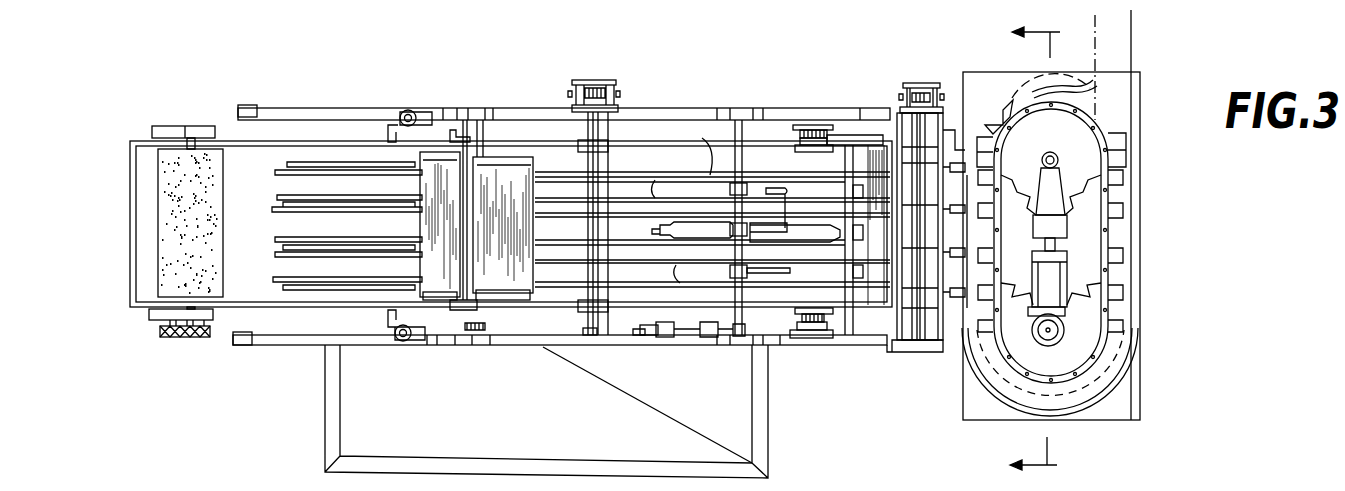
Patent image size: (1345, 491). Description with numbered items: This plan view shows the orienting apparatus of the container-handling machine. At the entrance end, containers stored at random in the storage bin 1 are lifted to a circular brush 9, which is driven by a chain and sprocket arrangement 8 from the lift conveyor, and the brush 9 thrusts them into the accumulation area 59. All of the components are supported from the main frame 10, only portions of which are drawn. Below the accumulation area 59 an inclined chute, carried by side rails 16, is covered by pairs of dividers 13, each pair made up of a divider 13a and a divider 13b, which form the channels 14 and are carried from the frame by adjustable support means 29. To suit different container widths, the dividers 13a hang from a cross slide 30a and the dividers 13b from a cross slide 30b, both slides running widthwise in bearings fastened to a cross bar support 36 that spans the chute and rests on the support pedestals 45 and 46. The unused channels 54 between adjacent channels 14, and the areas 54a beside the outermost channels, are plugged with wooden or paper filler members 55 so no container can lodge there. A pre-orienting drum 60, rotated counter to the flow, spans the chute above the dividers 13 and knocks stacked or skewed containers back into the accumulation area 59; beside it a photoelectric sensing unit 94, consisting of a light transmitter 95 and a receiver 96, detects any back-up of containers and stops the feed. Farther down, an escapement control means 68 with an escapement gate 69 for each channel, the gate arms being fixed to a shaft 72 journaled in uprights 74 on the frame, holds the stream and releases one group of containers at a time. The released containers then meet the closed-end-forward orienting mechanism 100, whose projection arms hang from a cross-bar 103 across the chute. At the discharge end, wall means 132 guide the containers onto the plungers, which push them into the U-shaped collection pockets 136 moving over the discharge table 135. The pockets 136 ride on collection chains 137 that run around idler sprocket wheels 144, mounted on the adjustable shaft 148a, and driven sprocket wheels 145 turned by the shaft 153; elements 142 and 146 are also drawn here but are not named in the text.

The storage bin 1 is at (490, 422).
The chain and sprocket arrangement 8 is at (160, 333).
The circular brush 9 is at (206, 208).
The main frame 10 is at (701, 107).
The dividers 13 is at (278, 171).
The divider 13a is at (684, 148).
The divider 13b is at (693, 229).
The channels 14 is at (378, 194).
The side rails 16 is at (1010, 251).
The adjustable support means 29 is at (558, 108).
The cross slide 30a is at (592, 232).
The cross slide 30b is at (600, 271).
The cross bar support 36 is at (592, 271).
The support pedestal 45 is at (594, 340).
The support pedestal 46 is at (608, 86).
The unused channels 54 is at (272, 200).
The areas alongside outermost channels 54a is at (287, 162).
The filler members 55 is at (340, 163).
The accumulation area 59 is at (230, 232).
The pre-orienting drum 60 is at (487, 157).
The escapement control means 68 is at (777, 356).
The escapement gates 69 is at (787, 190).
The shaft 72 is at (754, 142).
The uprights 74 is at (739, 110).
The photoelectric sensing unit 94 is at (370, 356).
The light transmitter 95 is at (415, 341).
The receiver 96 is at (422, 108).
The closed-end-forward orienting mechanism 100 is at (870, 106).
The cross-bar 103 is at (858, 320).
The wall means 132 is at (1010, 167).
The discharge table 135 is at (1121, 405).
The collection pockets 136 is at (1000, 112).
The collection chains 137 is at (1000, 230).
The shaft line 142 is at (1123, 63).
The sprocket wheels 144 is at (1088, 153).
The sprocket wheels 145 is at (1080, 345).
The piston body 146 is at (1048, 268).
The shaft 148a is at (1056, 157).
The shaft 153 is at (1063, 333).